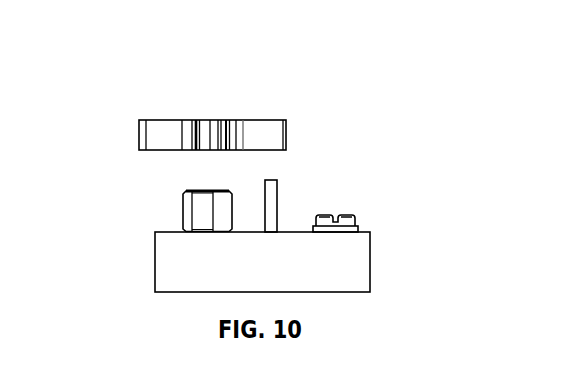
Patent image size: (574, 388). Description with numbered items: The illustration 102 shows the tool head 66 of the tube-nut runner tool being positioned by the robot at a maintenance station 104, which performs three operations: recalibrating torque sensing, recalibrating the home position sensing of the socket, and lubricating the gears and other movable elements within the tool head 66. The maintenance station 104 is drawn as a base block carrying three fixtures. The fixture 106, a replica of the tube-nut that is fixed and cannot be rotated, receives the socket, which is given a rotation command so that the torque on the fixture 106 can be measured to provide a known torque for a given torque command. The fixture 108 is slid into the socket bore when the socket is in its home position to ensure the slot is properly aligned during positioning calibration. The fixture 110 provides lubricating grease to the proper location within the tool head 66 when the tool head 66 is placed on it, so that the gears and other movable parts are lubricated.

The illustration 102 is at (106, 90).
The tool head 66 is at (286, 133).
The maintenance station 104 is at (390, 261).
The fixture 106 is at (182, 213).
The fixture 108 is at (277, 198).
The fixture 110 is at (358, 225).